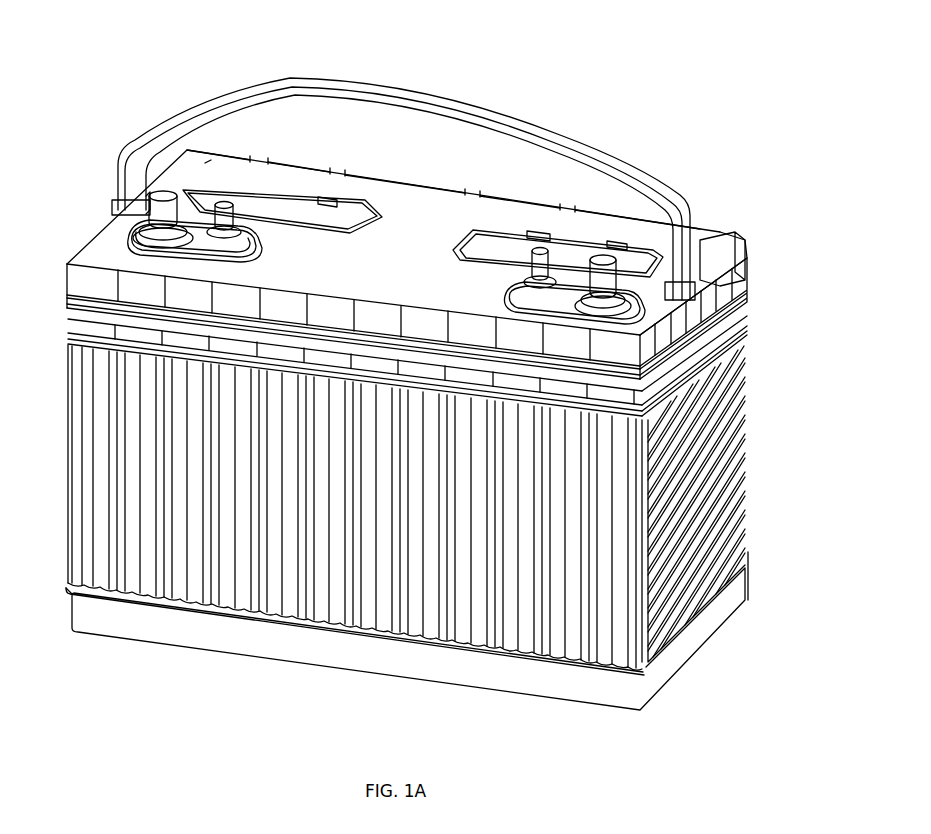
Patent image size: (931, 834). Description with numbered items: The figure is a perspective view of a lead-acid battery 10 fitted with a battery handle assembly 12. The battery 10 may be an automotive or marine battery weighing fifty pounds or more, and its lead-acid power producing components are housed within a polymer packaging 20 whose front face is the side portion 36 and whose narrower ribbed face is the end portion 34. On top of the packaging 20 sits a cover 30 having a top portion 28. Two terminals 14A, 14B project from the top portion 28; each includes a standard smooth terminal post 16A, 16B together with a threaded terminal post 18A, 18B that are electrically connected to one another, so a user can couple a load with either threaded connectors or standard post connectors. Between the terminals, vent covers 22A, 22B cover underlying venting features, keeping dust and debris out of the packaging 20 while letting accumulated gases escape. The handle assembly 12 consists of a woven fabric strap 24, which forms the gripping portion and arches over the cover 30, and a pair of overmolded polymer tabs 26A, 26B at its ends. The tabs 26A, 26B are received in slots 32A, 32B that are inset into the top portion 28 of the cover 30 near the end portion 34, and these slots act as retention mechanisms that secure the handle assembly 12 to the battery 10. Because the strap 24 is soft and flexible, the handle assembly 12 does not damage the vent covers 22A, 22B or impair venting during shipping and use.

The lead-acid battery 10 is at (528, 36).
The battery handle assembly 12 is at (657, 181).
The terminal 14A is at (185, 256).
The terminal 14B is at (511, 296).
The smooth terminal post 16A is at (165, 212).
The smooth terminal post 16B is at (605, 268).
The threaded terminal post 18A is at (227, 213).
The threaded terminal post 18B is at (545, 262).
The packaging 20 is at (555, 571).
The vent cover 22A is at (290, 222).
The vent cover 22B is at (492, 256).
The woven fabric strap 24 is at (330, 80).
The overmolded polymer tab 26A is at (115, 208).
The overmolded polymer tab 26B is at (690, 277).
The top portion 28 is at (410, 228).
The cover 30 is at (212, 160).
The slot 32A is at (147, 200).
The slot 32B is at (735, 262).
The end portion 34 is at (690, 508).
The side portion 36 is at (290, 576).